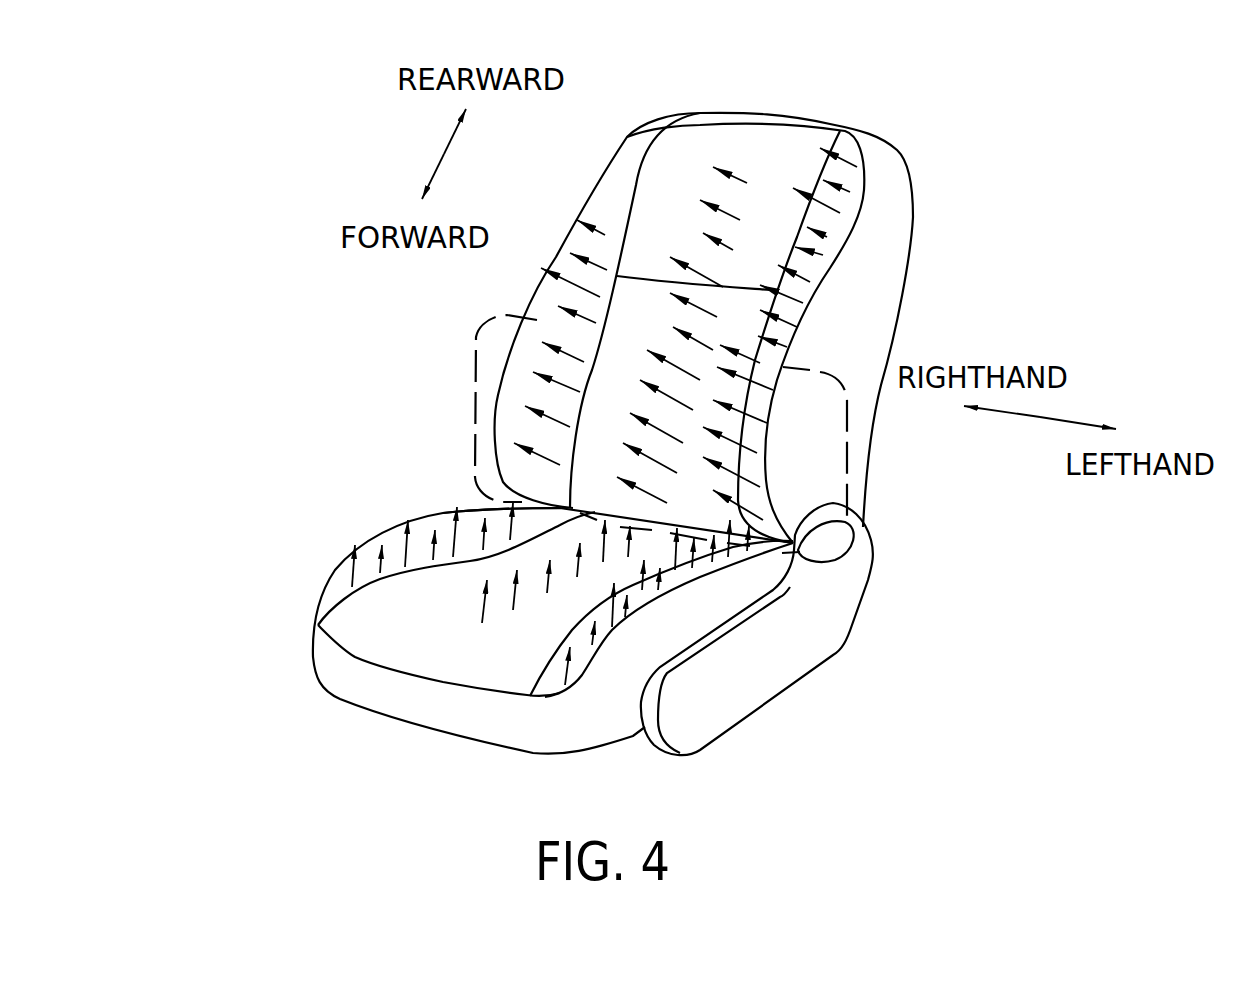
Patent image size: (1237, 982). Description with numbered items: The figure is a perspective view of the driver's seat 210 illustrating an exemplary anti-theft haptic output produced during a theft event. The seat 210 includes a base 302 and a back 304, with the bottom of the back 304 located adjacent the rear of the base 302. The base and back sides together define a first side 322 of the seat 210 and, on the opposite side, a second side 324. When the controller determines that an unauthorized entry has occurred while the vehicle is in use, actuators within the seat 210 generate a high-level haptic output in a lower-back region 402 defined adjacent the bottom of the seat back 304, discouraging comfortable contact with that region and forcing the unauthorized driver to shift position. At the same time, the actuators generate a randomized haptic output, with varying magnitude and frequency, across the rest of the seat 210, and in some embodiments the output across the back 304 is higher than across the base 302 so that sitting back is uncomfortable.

The driver's seat 210 is at (627, 92).
The base 302 is at (327, 666).
The back 304 is at (786, 147).
The first side 322 is at (628, 712).
The second side 324 is at (312, 594).
The lower-back region 402 is at (473, 335).